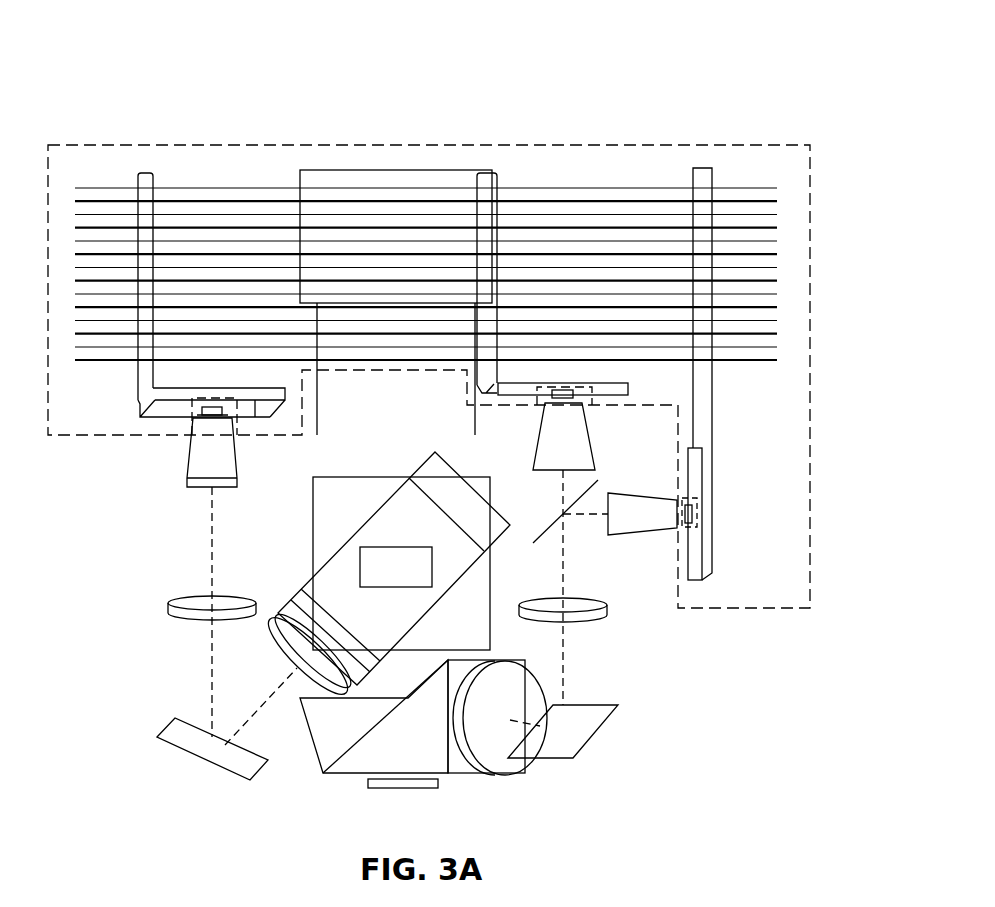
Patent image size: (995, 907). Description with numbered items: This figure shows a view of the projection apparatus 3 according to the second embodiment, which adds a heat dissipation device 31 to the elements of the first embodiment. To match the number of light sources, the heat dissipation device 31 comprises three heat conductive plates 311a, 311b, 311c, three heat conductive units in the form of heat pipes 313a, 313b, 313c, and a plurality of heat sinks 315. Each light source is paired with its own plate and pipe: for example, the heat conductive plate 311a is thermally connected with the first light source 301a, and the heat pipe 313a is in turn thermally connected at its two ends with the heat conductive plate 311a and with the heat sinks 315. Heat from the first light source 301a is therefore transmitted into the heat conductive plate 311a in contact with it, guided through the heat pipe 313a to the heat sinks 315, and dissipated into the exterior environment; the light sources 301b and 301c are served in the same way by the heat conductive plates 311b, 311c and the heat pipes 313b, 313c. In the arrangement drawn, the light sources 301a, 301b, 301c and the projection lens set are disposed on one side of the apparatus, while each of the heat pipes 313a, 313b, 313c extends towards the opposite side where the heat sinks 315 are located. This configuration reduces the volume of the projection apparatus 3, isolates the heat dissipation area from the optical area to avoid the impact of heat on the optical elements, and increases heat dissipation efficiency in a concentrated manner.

The projection apparatus 3 is at (572, 68).
The heat dissipation device 31 is at (626, 145).
The heat sinks 315 is at (748, 361).
The heat pipe 313a is at (140, 380).
The heat pipe 313b is at (489, 371).
The heat pipe 313c is at (703, 440).
The heat conductive plate 311a is at (255, 405).
The heat conductive plate 311b is at (623, 386).
The heat conductive plate 311c is at (698, 488).
The first light source 301a is at (200, 410).
The light source 301b is at (575, 395).
The light source 301c is at (685, 520).